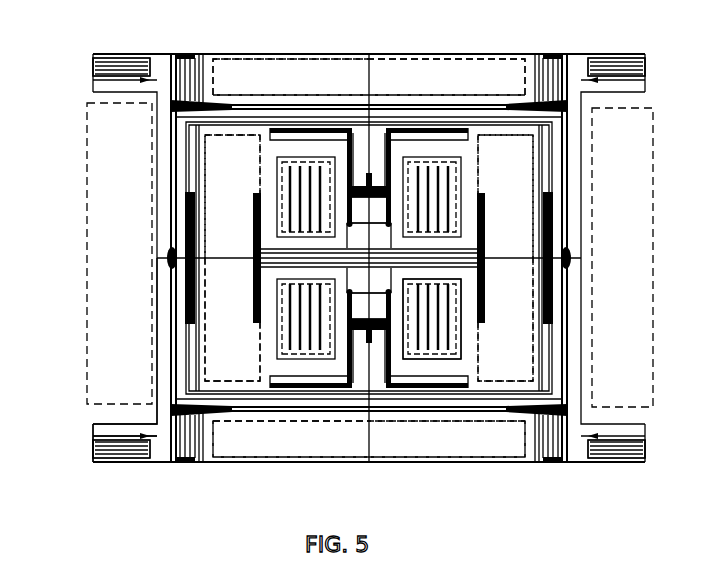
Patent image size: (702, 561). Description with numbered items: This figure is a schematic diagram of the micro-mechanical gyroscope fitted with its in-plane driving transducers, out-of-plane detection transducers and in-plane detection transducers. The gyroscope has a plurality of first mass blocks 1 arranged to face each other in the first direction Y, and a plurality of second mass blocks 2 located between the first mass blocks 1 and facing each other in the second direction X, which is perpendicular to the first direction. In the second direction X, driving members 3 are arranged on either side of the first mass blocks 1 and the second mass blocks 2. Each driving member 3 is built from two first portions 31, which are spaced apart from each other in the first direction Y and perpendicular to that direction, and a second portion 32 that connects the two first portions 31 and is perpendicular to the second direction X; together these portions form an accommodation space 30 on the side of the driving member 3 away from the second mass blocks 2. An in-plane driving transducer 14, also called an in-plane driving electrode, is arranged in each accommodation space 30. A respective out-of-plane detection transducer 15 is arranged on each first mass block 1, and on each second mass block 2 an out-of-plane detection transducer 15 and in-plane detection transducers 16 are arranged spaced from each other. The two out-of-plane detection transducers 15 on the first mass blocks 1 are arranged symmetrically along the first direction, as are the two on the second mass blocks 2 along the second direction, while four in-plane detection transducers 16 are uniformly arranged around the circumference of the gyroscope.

The first mass block 1 is at (527, 53).
The second mass block 2 is at (443, 370).
The driving member 3 is at (168, 115).
The in-plane driving transducer 14 is at (88, 265).
The out-of-plane detection transducer 15 is at (250, 53).
The in-plane detection transducer 16 is at (322, 358).
The accommodation space 30 is at (140, 416).
The first portion 31 is at (100, 85).
The second portion 32 is at (163, 318).